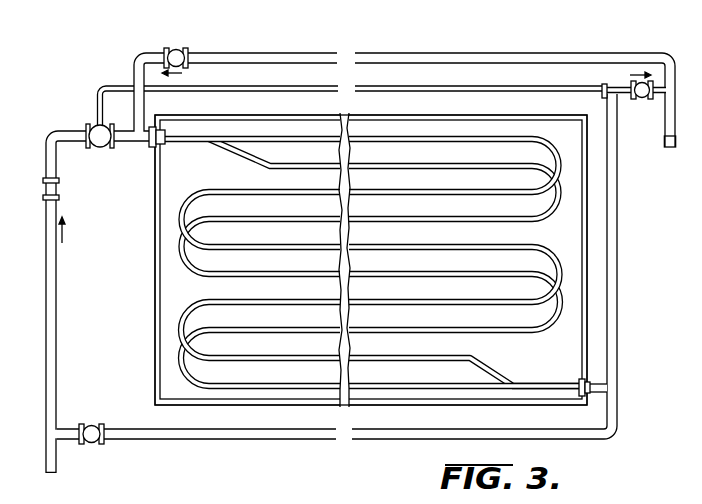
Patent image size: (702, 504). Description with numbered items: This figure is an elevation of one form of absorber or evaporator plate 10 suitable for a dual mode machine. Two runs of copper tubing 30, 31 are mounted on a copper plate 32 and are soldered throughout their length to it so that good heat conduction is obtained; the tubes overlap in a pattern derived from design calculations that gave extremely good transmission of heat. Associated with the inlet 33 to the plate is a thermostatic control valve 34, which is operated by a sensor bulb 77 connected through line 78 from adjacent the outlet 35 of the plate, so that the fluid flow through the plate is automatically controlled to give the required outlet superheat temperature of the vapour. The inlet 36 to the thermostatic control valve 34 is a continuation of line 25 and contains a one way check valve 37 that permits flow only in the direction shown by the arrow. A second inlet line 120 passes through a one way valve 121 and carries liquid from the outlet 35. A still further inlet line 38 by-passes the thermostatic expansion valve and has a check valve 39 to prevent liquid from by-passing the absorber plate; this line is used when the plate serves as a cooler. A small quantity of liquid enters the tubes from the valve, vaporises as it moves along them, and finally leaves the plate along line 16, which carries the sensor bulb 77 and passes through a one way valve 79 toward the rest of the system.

The evaporator plate 10 is at (588, 231).
The outlet line 16 is at (667, 137).
The line 25 is at (58, 338).
The copper tubing run 30 is at (261, 136).
The copper tubing run 31 is at (308, 164).
The copper plate 32 is at (574, 330).
The inlet 33 is at (140, 146).
The thermostatic control valve 34 is at (99, 147).
The outlet 35 is at (598, 382).
The inlet 36 is at (73, 131).
The one way check valve 37 is at (60, 189).
The inlet line 38 is at (136, 66).
The check valve 39 is at (184, 50).
The sensor bulb 77 is at (601, 92).
The line 78 is at (412, 93).
The one way valve 79 is at (642, 101).
The second inlet line 120 is at (224, 441).
The one way valve 121 is at (92, 445).